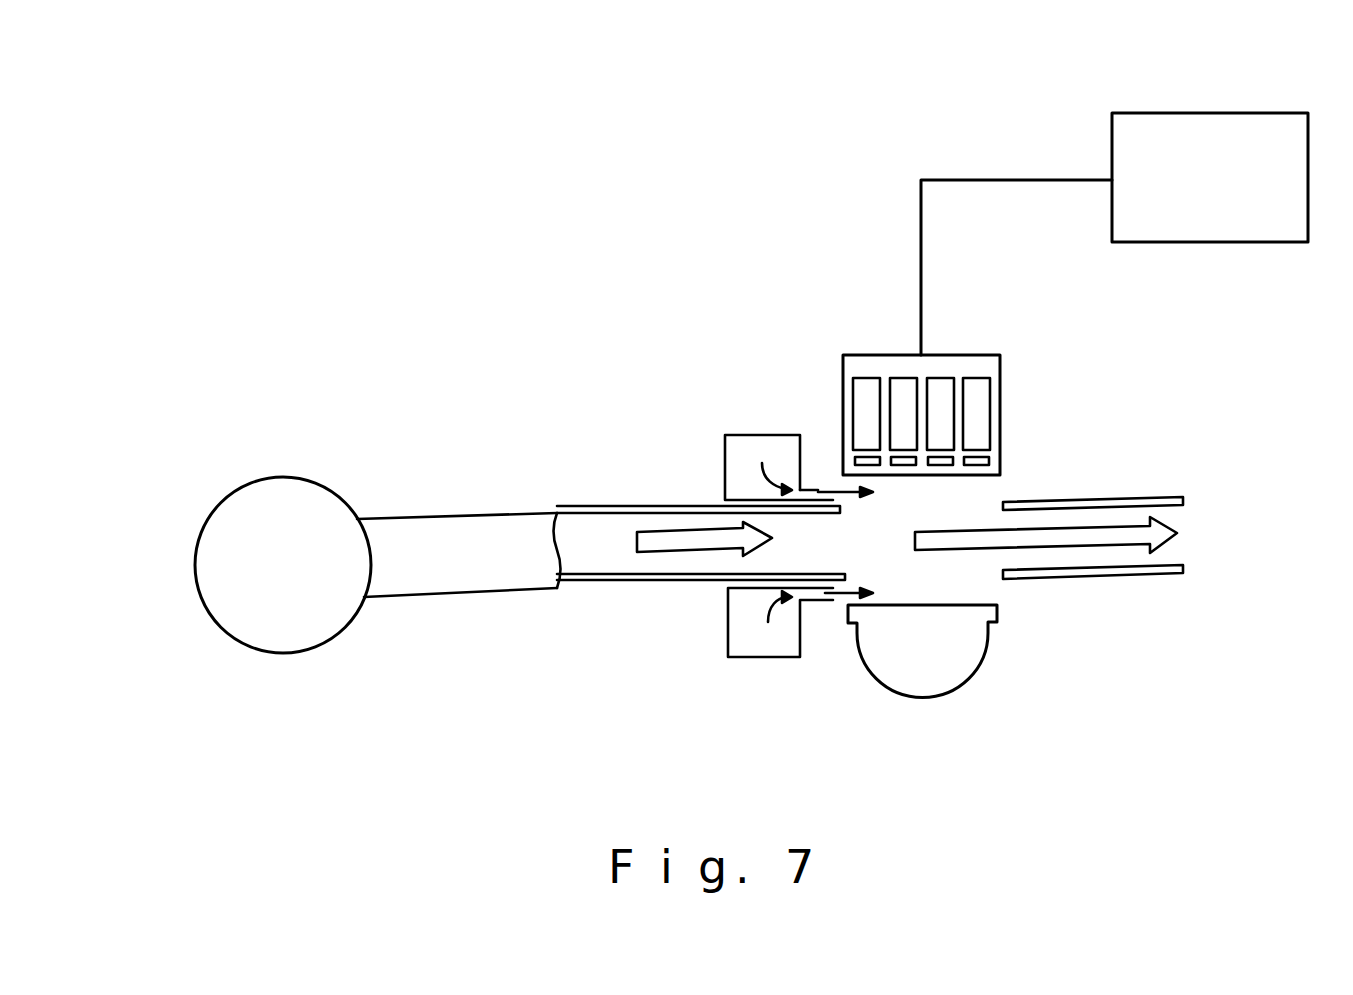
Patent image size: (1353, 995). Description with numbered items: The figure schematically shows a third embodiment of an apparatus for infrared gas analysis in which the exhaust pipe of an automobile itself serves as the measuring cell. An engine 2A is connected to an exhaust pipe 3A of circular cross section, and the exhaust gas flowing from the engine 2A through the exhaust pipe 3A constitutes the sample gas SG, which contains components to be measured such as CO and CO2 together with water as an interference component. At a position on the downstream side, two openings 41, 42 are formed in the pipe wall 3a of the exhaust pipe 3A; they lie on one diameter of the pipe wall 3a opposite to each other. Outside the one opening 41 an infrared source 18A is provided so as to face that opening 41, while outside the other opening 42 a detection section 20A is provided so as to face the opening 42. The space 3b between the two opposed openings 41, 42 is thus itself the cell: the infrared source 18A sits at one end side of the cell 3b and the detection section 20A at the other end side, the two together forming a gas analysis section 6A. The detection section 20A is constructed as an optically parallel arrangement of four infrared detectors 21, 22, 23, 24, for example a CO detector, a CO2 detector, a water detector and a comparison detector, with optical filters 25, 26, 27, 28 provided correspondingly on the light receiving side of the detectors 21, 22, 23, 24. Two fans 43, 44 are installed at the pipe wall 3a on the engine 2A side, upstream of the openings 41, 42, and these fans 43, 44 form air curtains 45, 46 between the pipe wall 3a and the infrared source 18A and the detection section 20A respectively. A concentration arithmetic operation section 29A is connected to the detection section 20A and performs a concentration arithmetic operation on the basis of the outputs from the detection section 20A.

The engine 2A is at (323, 486).
The exhaust pipe 3A is at (629, 634).
The pipe wall 3a is at (1086, 593).
The space (cell) 3b is at (902, 556).
The gas analysis section 6A is at (935, 396).
The infrared source 18A is at (878, 680).
The detection section 20A is at (925, 375).
The infrared detector 21 is at (926, 408).
The infrared detector 22 is at (945, 378).
The infrared detector 23 is at (903, 378).
The infrared detector 24 is at (850, 405).
The optical filter 25 is at (992, 455).
The optical filter 26 is at (947, 468).
The optical filter 27 is at (907, 470).
The optical filter 28 is at (855, 458).
The concentration arithmetic operation section 29A is at (1192, 113).
The opening 41 is at (1003, 578).
The opening 42 is at (1003, 503).
The fan 43 is at (728, 618).
The fan 44 is at (725, 452).
The air curtain 45 is at (843, 596).
The air curtain 46 is at (843, 478).
The sample gas SG is at (650, 542).